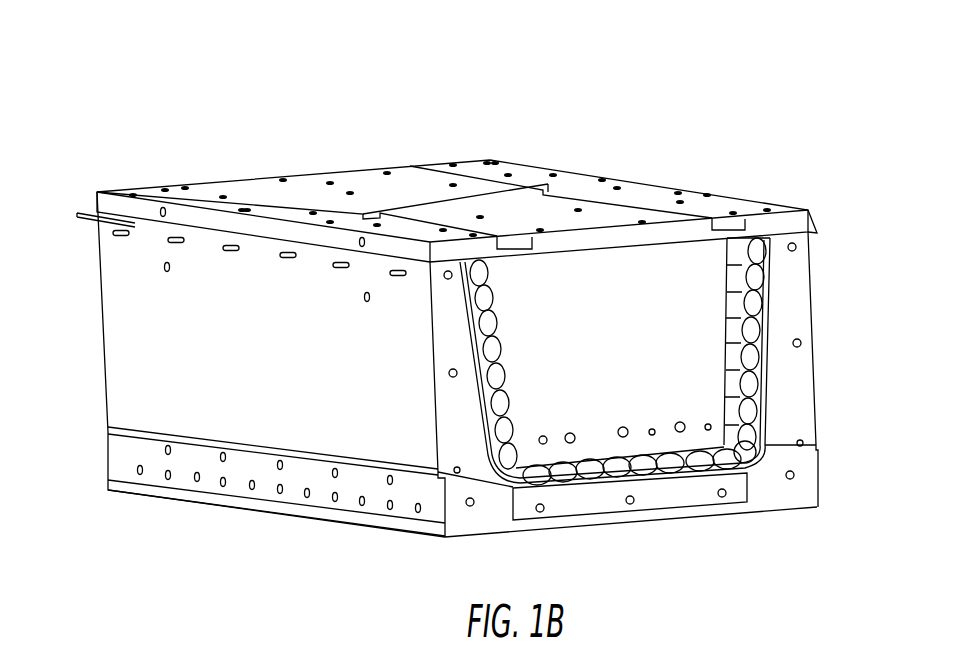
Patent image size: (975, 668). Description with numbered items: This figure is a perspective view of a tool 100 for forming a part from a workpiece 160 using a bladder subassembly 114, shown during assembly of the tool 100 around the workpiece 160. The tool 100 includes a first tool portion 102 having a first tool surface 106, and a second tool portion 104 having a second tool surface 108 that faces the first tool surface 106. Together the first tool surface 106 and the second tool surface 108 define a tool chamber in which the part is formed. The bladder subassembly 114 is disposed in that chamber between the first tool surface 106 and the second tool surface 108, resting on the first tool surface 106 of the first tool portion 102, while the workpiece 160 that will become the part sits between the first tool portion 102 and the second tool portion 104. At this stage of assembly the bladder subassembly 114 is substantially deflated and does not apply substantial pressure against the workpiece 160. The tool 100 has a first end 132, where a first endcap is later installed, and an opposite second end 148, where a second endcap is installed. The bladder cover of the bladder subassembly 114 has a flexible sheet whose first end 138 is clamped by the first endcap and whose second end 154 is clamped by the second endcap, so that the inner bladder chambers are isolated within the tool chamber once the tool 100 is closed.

The tool 100 is at (113, 58).
The first tool portion 102 is at (690, 258).
The second tool portion 104 is at (803, 418).
The first tool surface 106 is at (762, 268).
The second tool surface 108 is at (760, 398).
The bladder subassembly 114 is at (760, 377).
The first end 132 is at (677, 443).
The first end of the flexible sheet 138 is at (817, 233).
The second end 148 is at (100, 326).
The second end of the flexible sheet 154 is at (80, 215).
The workpiece 160 is at (760, 327).